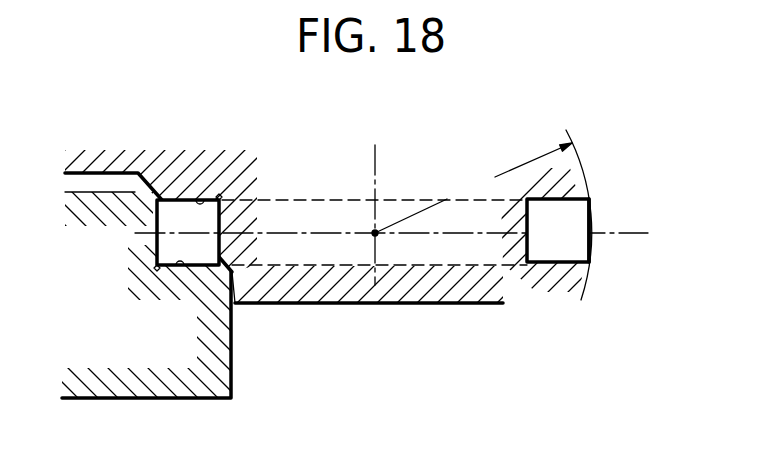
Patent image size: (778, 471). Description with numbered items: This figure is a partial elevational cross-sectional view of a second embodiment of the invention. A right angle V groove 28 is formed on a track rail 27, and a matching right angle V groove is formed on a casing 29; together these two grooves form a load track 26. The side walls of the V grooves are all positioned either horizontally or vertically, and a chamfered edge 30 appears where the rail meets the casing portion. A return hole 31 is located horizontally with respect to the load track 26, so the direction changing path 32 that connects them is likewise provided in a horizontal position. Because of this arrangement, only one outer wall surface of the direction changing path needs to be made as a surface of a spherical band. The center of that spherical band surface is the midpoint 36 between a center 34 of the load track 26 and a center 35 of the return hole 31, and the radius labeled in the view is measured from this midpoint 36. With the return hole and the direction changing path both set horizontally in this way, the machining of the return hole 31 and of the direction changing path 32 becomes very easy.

The load track 26 is at (207, 200).
The track rail 27 is at (166, 350).
The right angle V groove 28 is at (184, 262).
The casing 29 is at (330, 290).
The chamfered edge 30 is at (216, 216).
The return hole 31 is at (588, 215).
The direction changing path 32 is at (390, 200).
The center of the load track 34 is at (183, 228).
The center of the return hole 35 is at (573, 240).
The midpoint 36 is at (375, 233).